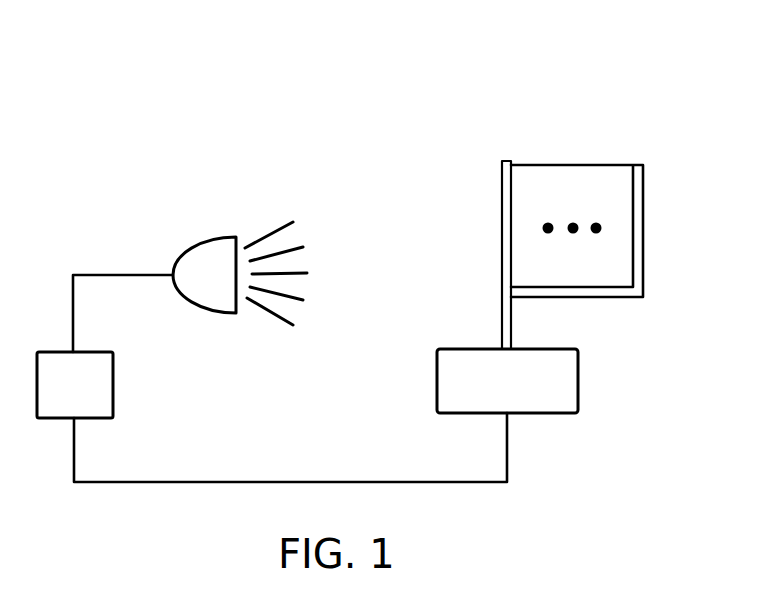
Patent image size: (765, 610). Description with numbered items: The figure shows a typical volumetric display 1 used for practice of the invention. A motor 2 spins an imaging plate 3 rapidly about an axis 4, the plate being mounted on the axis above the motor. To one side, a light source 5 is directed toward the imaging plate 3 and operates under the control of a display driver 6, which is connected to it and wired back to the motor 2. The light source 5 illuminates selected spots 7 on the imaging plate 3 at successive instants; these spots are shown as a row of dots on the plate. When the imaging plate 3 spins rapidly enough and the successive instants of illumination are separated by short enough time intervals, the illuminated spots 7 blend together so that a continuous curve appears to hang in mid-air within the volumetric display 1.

The volumetric display 1 is at (497, 93).
The motor 2 is at (578, 386).
The imaging plate 3 is at (577, 165).
The axis 4 is at (502, 200).
The light source 5 is at (206, 236).
The display driver 6 is at (113, 389).
The selected spots 7 is at (615, 228).